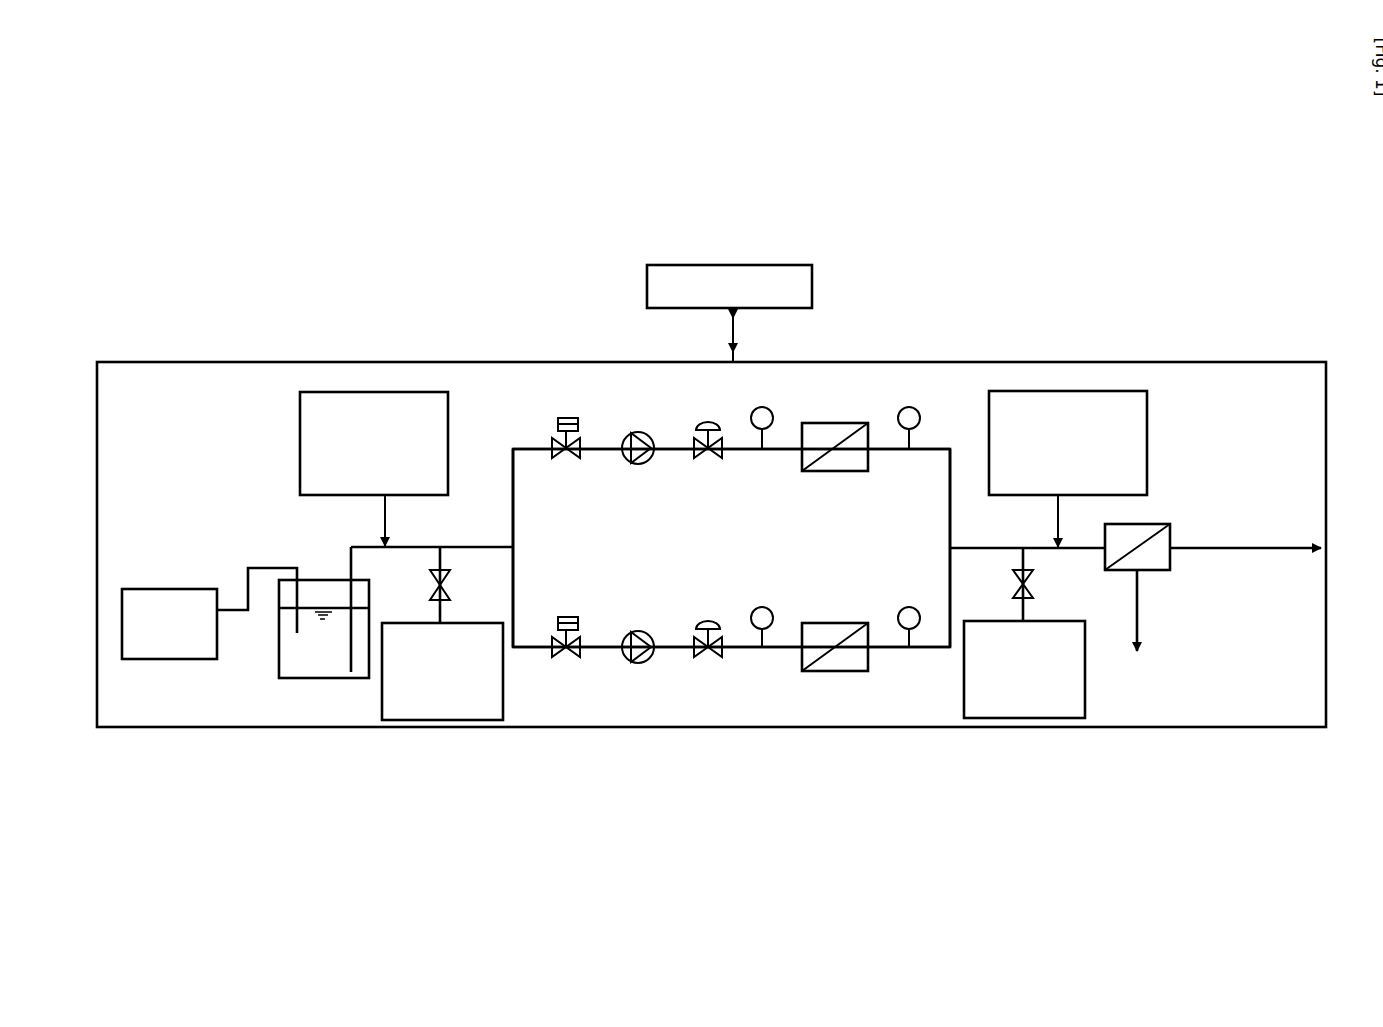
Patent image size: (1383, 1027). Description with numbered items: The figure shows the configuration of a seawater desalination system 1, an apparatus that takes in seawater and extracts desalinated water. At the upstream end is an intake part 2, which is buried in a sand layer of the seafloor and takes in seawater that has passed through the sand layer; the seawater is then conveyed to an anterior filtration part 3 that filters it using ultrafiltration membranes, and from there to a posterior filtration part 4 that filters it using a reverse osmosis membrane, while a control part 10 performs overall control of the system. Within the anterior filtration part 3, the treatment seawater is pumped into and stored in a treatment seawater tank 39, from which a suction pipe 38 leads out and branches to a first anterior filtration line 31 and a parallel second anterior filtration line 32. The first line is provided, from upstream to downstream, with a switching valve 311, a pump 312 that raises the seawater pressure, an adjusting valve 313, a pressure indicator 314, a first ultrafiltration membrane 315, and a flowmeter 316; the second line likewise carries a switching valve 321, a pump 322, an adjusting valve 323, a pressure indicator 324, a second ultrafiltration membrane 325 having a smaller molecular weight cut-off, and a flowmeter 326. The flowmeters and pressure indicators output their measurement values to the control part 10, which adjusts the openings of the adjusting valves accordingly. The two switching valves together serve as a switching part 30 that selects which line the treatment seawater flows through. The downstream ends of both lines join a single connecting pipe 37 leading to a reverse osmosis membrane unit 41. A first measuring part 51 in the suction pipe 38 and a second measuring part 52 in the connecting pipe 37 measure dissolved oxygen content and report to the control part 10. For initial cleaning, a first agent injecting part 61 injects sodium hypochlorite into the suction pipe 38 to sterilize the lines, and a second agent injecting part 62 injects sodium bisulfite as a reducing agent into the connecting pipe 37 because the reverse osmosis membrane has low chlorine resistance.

The seawater desalination system 1 is at (213, 299).
The intake part 2 is at (168, 588).
The anterior filtration part 3 is at (730, 772).
The posterior filtration part 4 is at (1213, 290).
The control part 10 is at (812, 282).
The switching part 30 is at (540, 268).
The first anterior filtration line 31 is at (533, 447).
The second anterior filtration line 32 is at (533, 652).
The connecting pipe 37 is at (985, 547).
The suction pipe 38 is at (462, 547).
The treatment seawater tank 39 is at (277, 635).
The reverse osmosis membrane unit 41 is at (1153, 524).
The first measuring part 51 is at (433, 720).
The second measuring part 52 is at (1027, 718).
The first agent injecting part 61 is at (363, 392).
The second agent injecting part 62 is at (1068, 391).
The switching valve 311 is at (567, 418).
The pump 312 is at (637, 432).
The adjusting valve 313 is at (708, 423).
The pressure indicator 314 is at (762, 407).
The first ultrafiltration membrane 315 is at (835, 423).
The flowmeter 316 is at (909, 407).
The switching valve 321 is at (567, 657).
The pump 322 is at (637, 665).
The adjusting valve 323 is at (708, 660).
The pressure indicator 324 is at (773, 620).
The second ultrafiltration membrane 325 is at (837, 672).
The flowmeter 326 is at (921, 620).